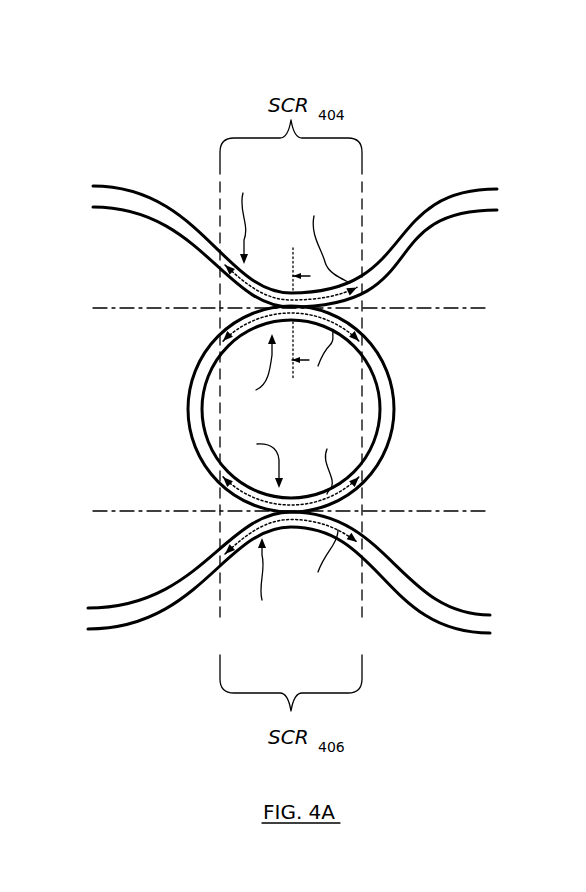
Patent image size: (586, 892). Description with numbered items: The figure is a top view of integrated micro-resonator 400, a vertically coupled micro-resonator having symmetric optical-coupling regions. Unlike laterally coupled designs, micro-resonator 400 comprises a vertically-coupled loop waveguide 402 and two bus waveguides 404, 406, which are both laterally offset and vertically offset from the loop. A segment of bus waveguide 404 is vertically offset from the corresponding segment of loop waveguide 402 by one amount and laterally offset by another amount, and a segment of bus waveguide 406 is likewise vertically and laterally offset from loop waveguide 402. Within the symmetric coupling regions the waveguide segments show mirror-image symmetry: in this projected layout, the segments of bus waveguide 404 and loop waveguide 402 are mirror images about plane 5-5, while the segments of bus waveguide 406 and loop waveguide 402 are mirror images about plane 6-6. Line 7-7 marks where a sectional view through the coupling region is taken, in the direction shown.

The integrated micro-resonator 400 is at (285, 366).
The loop waveguide 402 is at (196, 400).
The bus waveguide 404 is at (178, 222).
The bus waveguide 406 is at (133, 617).
The plane 5-5 is at (437, 308).
The plane 6-6 is at (448, 510).
The line 7-7 is at (294, 246).